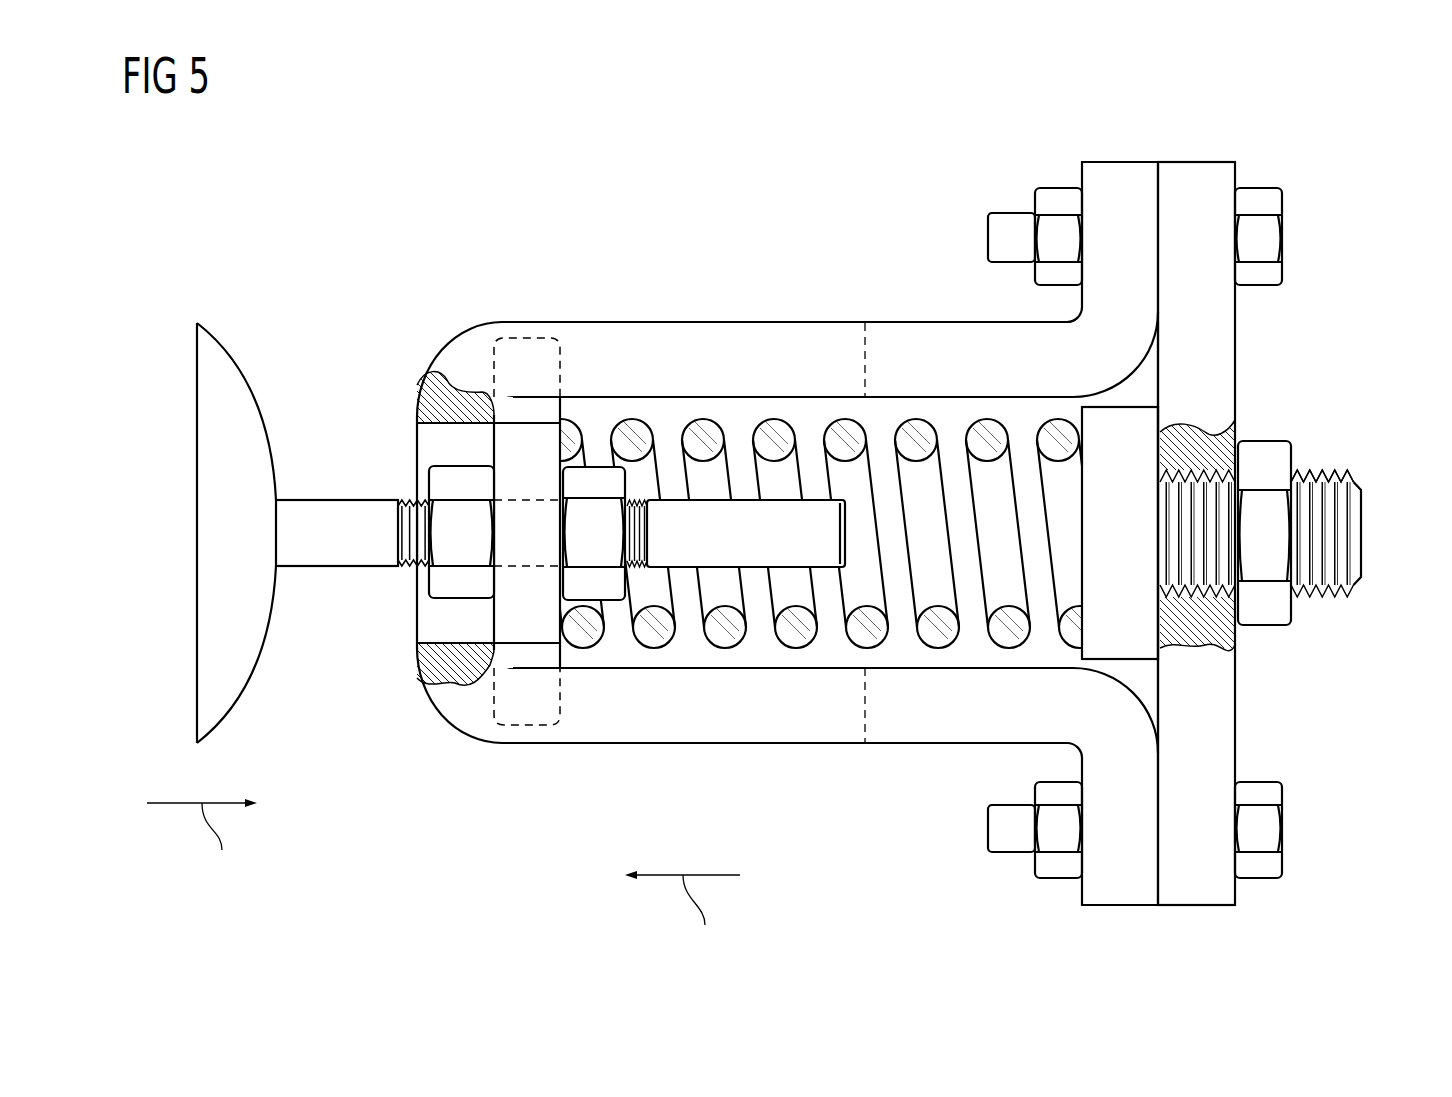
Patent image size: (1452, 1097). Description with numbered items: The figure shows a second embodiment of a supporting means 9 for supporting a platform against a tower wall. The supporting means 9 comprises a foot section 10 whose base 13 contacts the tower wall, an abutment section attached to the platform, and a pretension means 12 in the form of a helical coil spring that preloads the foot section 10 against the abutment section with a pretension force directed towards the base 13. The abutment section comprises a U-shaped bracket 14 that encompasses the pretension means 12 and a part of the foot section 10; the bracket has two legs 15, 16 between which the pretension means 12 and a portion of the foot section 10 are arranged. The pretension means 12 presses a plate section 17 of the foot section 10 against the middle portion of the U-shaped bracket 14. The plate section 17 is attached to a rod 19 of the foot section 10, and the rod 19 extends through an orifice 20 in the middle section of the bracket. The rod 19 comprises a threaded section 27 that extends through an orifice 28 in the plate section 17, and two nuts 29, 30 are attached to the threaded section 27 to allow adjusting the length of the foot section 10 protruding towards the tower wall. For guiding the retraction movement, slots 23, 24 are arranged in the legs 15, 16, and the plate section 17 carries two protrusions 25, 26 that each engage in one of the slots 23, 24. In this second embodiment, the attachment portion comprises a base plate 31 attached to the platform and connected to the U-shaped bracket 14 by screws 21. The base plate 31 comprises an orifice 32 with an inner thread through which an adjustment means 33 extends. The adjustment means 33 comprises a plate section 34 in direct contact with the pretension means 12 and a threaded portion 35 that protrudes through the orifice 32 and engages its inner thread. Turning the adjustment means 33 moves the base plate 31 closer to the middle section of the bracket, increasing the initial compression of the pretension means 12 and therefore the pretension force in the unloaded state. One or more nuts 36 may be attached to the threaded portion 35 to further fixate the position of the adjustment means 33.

The supporting means 9 is at (1285, 150).
The foot section 10 is at (312, 498).
The pretension means 12 is at (773, 430).
The base 13 is at (220, 348).
The U-shaped bracket 14 is at (1117, 190).
The leg 15 is at (896, 345).
The leg 16 is at (918, 708).
The plate section 17 is at (523, 462).
The rod 19 is at (357, 498).
The orifice 20 is at (450, 625).
The screws 21 is at (1265, 242).
The slot 23 is at (505, 333).
The slot 24 is at (810, 705).
The protrusion 25 is at (515, 363).
The protrusion 26 is at (517, 708).
The threaded section 27 is at (410, 498).
The orifice 28 is at (534, 525).
The nut 29 is at (450, 580).
The nut 30 is at (586, 582).
The base plate 31 is at (1213, 407).
The orifice 32 is at (1210, 587).
The adjustment means 33 is at (1320, 474).
The plate section 34 is at (1138, 417).
The threaded portion 35 is at (1336, 560).
The nut 36 is at (1270, 455).